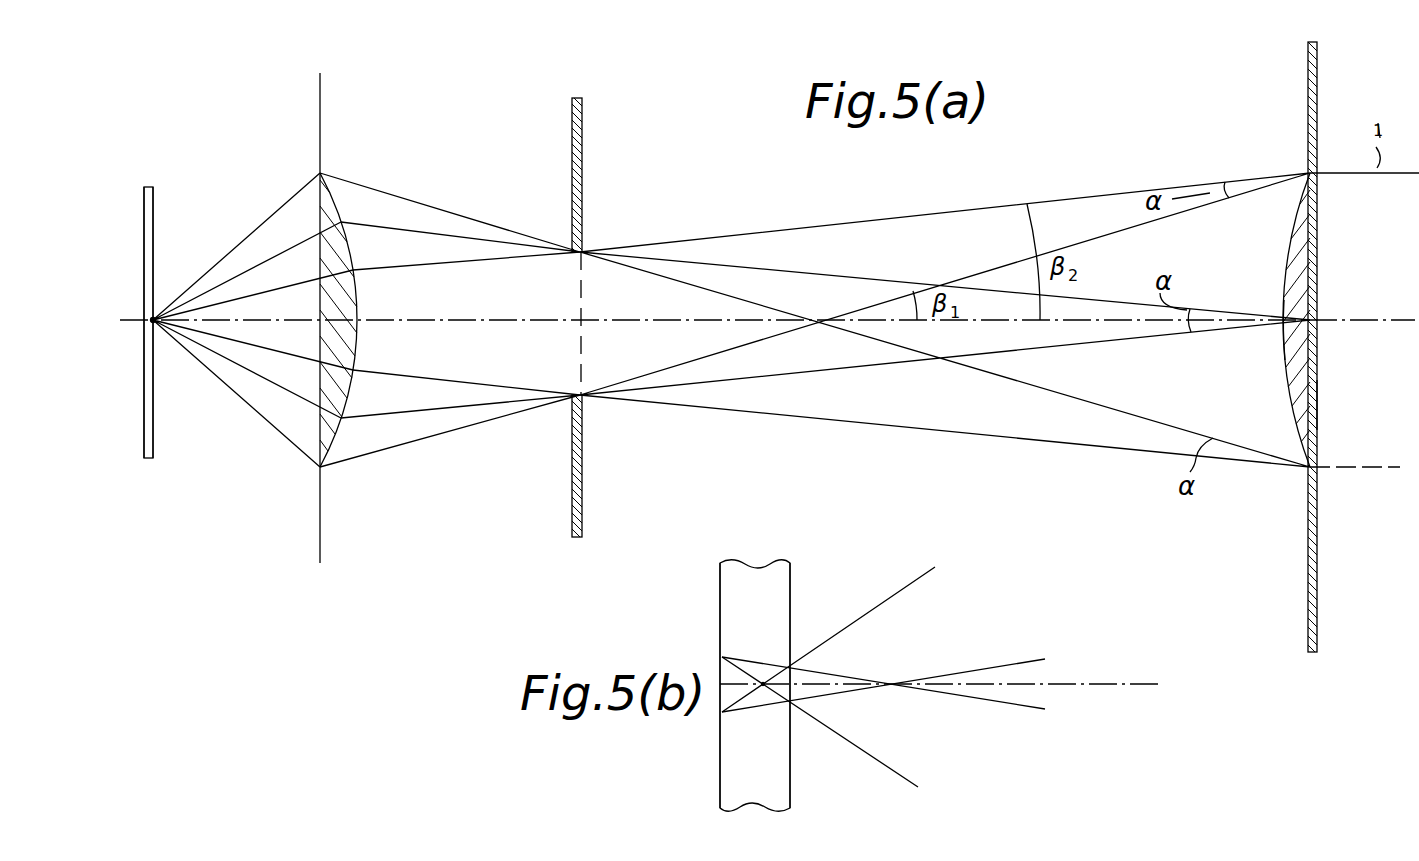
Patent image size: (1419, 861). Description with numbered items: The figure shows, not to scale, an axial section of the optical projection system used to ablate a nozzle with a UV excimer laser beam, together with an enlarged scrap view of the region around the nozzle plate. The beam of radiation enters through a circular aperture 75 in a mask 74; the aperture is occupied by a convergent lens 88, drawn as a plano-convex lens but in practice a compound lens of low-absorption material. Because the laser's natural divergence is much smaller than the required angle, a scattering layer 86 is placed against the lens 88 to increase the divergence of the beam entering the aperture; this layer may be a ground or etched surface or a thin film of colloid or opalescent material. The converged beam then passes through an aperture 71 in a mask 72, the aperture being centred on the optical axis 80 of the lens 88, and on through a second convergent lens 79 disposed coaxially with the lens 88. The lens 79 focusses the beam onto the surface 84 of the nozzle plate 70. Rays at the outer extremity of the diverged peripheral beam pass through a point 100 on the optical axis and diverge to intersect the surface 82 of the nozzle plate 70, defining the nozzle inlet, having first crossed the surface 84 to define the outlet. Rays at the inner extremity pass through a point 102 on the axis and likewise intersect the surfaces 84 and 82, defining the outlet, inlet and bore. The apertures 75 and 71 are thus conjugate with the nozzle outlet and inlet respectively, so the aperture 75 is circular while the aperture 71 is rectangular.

In FIG. 5A, the nozzle plate 70 is at (155, 186).
In FIG. 5B, the nozzle plate 70 is at (758, 560).
In FIG. 5A, the aperture 71 is at (583, 306).
In FIG. 5A, the mask 72 is at (584, 484).
In FIG. 5A, the mask 74 is at (1314, 578).
In FIG. 5A, the circular aperture 75 is at (1320, 405).
In FIG. 5A, the convergent lens 79 is at (343, 437).
In FIG. 5A, the optical axis 80 is at (517, 328).
In FIG. 5B, the optical axis 80 is at (1121, 690).
In FIG. 5A, the surface 82 is at (145, 459).
In FIG. 5B, the surface 82 is at (718, 604).
In FIG. 5A, the surface 84 is at (155, 238).
In FIG. 5B, the surface 84 is at (792, 592).
In FIG. 5A, the layer 86 is at (1330, 240).
In FIG. 5A, the convergent lens 88 is at (1284, 383).
In FIG. 5A, the point 100 is at (149, 318).
In FIG. 5B, the point 100 is at (762, 690).
In FIG. 5A, the point 102 is at (182, 300).
In FIG. 5B, the point 102 is at (893, 680).